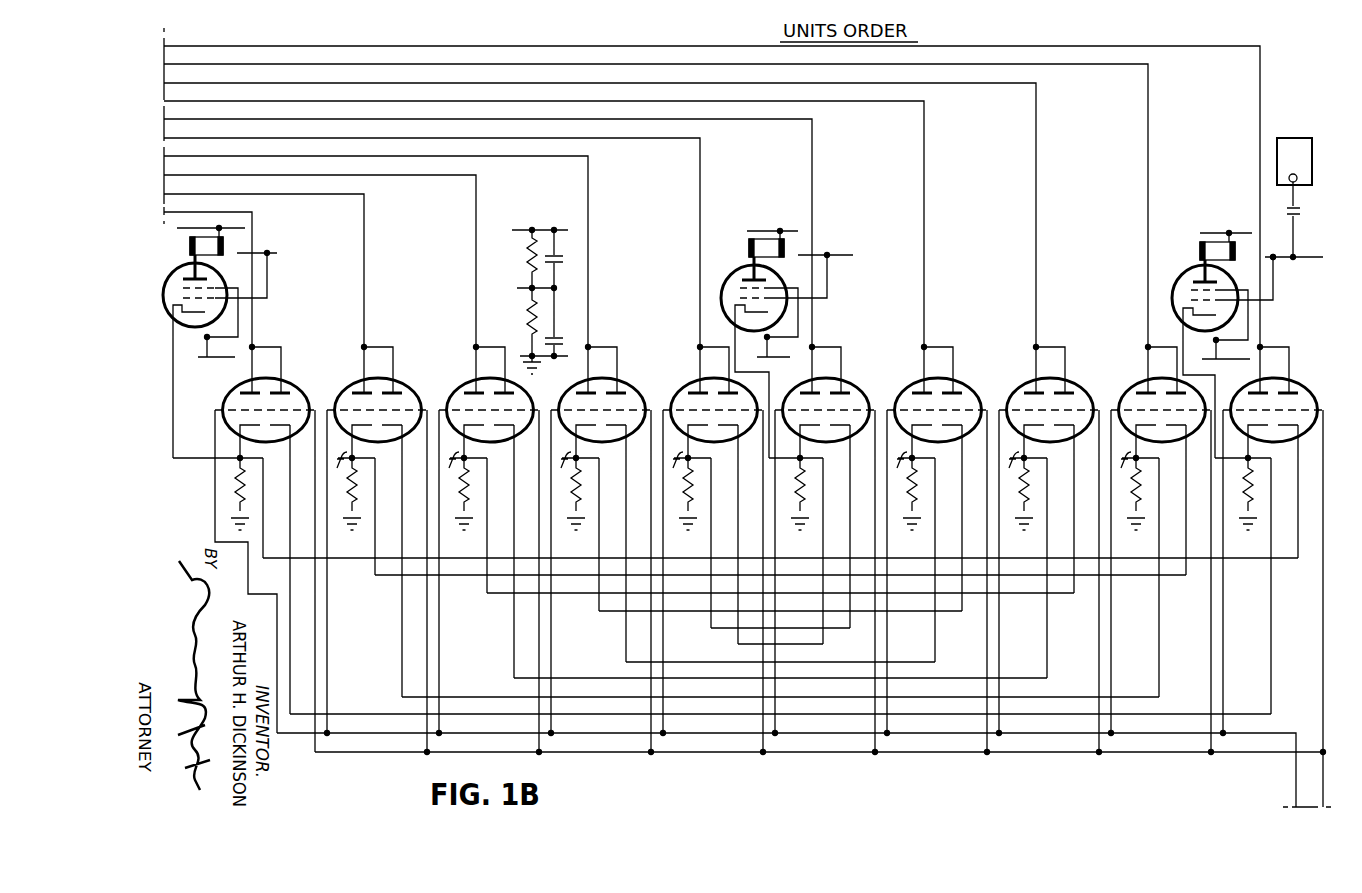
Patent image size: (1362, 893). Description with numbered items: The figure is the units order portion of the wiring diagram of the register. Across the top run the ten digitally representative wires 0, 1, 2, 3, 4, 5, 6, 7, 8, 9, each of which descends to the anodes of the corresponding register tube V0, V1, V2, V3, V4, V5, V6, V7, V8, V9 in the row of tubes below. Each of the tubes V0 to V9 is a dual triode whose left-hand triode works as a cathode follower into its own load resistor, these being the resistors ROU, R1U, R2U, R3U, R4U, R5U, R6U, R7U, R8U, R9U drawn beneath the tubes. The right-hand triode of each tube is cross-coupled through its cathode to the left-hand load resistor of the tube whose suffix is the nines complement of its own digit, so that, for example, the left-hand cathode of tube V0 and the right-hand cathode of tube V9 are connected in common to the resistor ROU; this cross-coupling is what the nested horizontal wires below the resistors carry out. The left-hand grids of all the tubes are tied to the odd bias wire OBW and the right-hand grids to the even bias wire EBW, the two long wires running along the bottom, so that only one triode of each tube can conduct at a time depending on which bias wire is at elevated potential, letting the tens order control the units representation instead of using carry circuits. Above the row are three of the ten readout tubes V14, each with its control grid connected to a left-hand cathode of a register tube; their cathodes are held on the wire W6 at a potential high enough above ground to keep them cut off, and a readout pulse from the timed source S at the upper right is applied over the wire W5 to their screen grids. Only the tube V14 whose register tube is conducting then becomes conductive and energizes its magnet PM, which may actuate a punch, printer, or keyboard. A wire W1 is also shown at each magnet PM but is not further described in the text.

The register tube V0 is at (283, 381).
The register tube V1 is at (355, 383).
The register tube V2 is at (467, 383).
The register tube V3 is at (579, 383).
The register tube V4 is at (691, 383).
The register tube V5 is at (803, 383).
The register tube V6 is at (915, 383).
The register tube V7 is at (1027, 383).
The register tube V8 is at (1139, 383).
The register tube V9 is at (1291, 381).
The readout tube V14 is at (228, 283).
The cathode follower load resistor ROU is at (235, 495).
The cathode follower load resistor R1U is at (358, 503).
The cathode follower load resistor R2U is at (470, 503).
The cathode follower load resistor R3U is at (582, 503).
The cathode follower load resistor R4U is at (694, 503).
The cathode follower load resistor R5U is at (806, 503).
The cathode follower load resistor R6U is at (918, 503).
The cathode follower load resistor R7U is at (1030, 503).
The cathode follower load resistor R8U is at (1142, 503).
The cathode follower load resistor R9U is at (1254, 503).
The magnet PM is at (224, 248).
The wire W1 is at (238, 229).
The wire W5 is at (277, 253).
The wire W6 is at (232, 357).
The timed source S is at (1294, 197).
The odd bias wire OBW is at (660, 752).
The even bias wire EBW is at (745, 733).
The digit wire 0 is at (198, 274).
The digit wire 1 is at (254, 265).
The digit wire 2 is at (310, 256).
The digit wire 3 is at (366, 246).
The digit wire 4 is at (422, 237).
The digit wire 5 is at (478, 228).
The digit wire 6 is at (534, 219).
The digit wire 7 is at (590, 210).
The digit wire 8 is at (646, 200).
The digit wire 9 is at (702, 191).